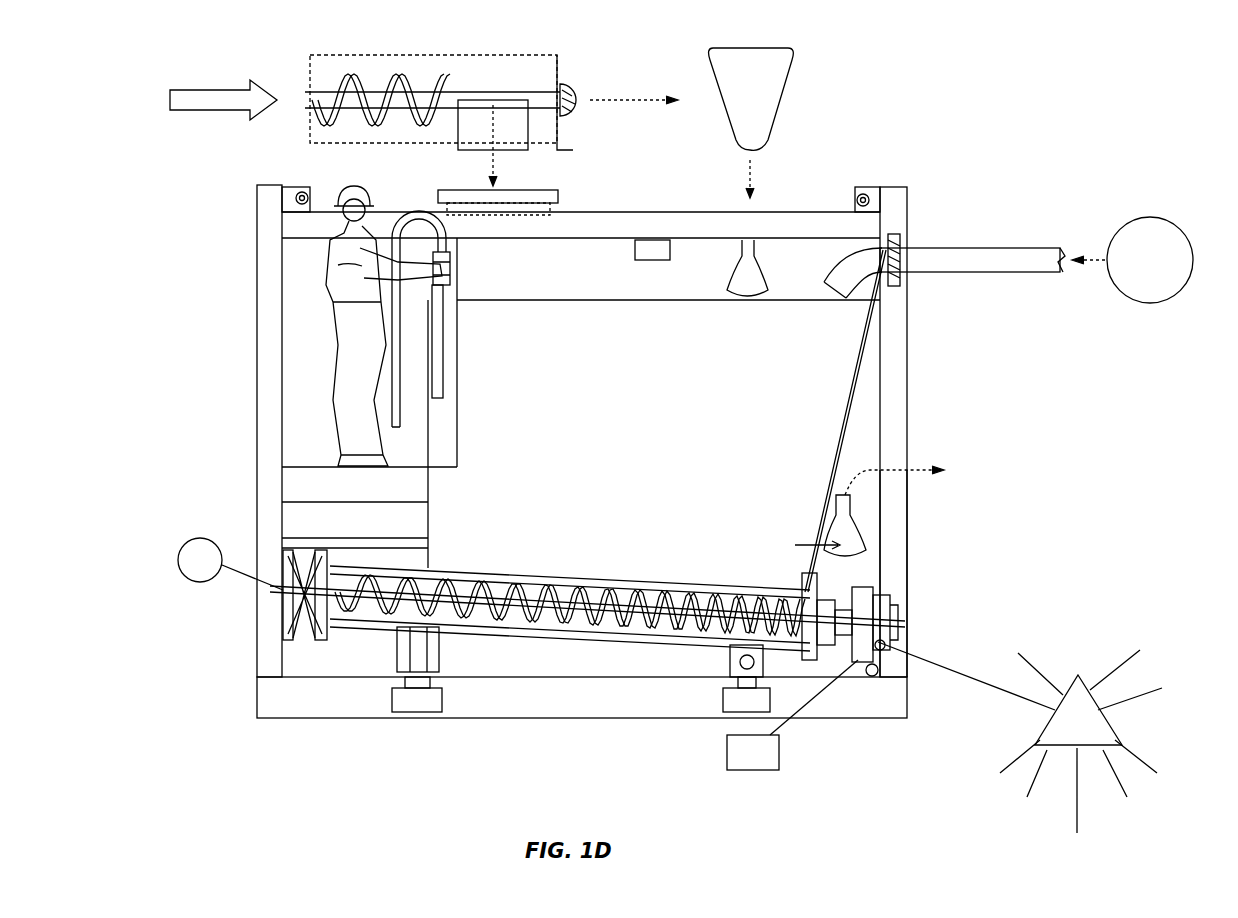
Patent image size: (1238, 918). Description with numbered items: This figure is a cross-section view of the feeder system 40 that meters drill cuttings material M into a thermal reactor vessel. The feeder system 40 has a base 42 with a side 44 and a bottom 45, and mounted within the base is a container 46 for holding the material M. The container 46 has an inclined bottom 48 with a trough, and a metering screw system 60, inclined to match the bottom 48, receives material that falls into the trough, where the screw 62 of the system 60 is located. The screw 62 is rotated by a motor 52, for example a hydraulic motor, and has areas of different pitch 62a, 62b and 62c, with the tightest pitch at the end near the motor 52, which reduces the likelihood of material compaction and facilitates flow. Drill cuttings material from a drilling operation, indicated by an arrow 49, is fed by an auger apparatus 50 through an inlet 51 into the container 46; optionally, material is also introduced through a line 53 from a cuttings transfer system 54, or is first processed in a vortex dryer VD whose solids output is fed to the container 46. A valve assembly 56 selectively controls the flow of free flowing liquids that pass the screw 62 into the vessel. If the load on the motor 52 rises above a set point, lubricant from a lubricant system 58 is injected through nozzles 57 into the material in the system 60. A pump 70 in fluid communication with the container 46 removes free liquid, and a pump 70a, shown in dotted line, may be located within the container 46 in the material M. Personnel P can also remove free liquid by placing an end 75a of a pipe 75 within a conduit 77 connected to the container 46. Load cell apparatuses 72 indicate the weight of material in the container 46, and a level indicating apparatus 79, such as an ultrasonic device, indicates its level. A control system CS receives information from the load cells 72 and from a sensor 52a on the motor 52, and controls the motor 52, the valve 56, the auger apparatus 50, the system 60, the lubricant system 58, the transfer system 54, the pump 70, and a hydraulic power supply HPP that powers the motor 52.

The feeder system 40 is at (163, 228).
The base 42 is at (908, 587).
The side 44 is at (262, 413).
The bottom 45 is at (262, 700).
The container 46 is at (855, 345).
The inclined bottom 48 is at (735, 580).
The arrow 49 is at (220, 88).
The auger apparatus 50 is at (558, 68).
The inlet 51 is at (525, 190).
The motor 52 is at (858, 665).
The sensor 52a is at (877, 675).
The line 53 is at (958, 248).
The system 54 is at (1130, 224).
The valve assembly 56 is at (283, 598).
The injection ports or nozzles 57 is at (398, 590).
The lubricant system 58 is at (195, 538).
The metering screw system 60 is at (587, 614).
The screw 62 is at (612, 638).
The area of different pitch 62a is at (440, 570).
The area of different pitch 62b is at (513, 578).
The area of different pitch 62c is at (672, 587).
The pump 70 is at (830, 507).
The pump 70a is at (737, 268).
The load cell apparatus 72 is at (392, 697).
The pipe 75 is at (392, 384).
The end 75a is at (445, 340).
The conduit 77 is at (455, 300).
The level indicating apparatus 79 is at (635, 250).
The personnel P is at (330, 282).
The vortex dryer VD is at (792, 62).
The drill cuttings material M is at (660, 427).
The hydraulic power supply HPP is at (727, 750).
The control system CS is at (1081, 746).